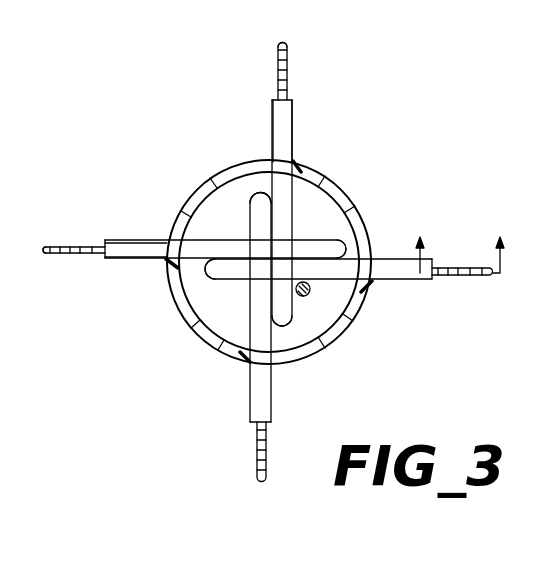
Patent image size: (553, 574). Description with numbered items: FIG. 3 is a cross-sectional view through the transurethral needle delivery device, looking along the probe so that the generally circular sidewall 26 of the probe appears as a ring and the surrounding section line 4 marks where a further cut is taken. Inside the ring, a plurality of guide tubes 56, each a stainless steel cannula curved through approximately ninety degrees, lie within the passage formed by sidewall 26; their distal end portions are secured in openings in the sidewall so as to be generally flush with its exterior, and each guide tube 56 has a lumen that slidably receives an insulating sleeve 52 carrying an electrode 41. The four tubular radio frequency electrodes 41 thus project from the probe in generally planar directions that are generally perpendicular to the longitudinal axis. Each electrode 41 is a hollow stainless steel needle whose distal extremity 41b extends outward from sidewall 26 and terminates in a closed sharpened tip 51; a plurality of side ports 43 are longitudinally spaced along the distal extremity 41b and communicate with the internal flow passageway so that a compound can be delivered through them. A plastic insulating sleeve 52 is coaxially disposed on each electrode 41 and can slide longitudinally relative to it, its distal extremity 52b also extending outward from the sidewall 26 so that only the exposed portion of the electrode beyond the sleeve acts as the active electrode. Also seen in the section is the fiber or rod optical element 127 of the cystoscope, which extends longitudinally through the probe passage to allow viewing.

The sidewall 26 is at (193, 200).
The radio frequency needle or electrode 41 is at (460, 279).
The distal extremity of electrode 41b is at (282, 74).
The side port 43 is at (290, 83).
The sharpened tip 51 is at (284, 44).
The insulating sleeve 52 is at (398, 280).
The distal extremity of insulating sleeve 52b is at (273, 133).
The guide tube 56 is at (296, 213).
The optical element 127 is at (308, 298).
The section line 4- 4 is at (462, 240).